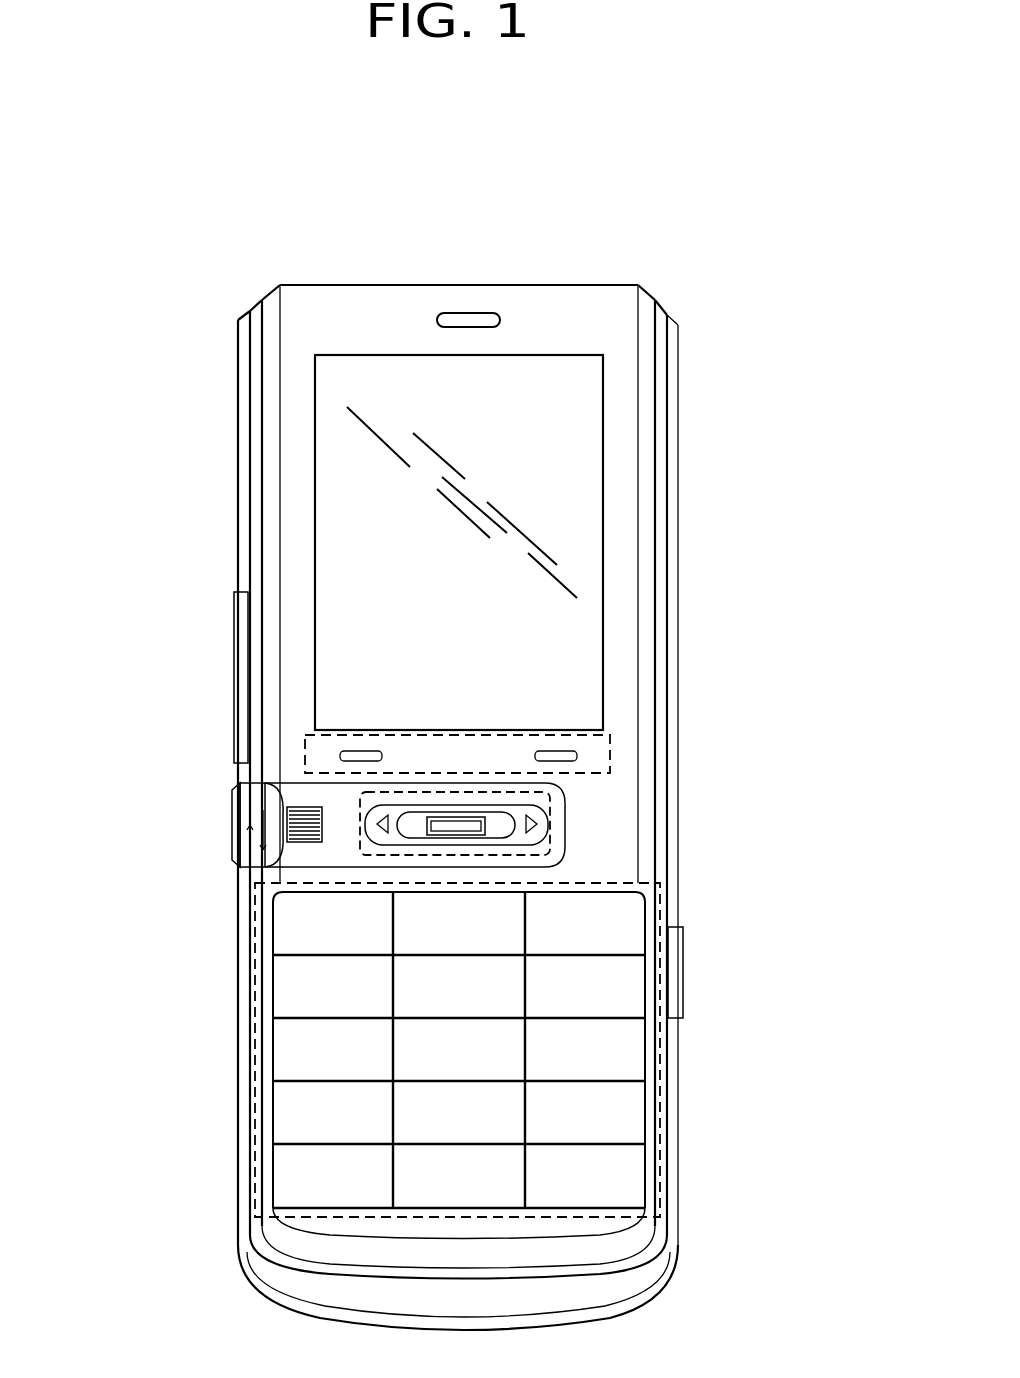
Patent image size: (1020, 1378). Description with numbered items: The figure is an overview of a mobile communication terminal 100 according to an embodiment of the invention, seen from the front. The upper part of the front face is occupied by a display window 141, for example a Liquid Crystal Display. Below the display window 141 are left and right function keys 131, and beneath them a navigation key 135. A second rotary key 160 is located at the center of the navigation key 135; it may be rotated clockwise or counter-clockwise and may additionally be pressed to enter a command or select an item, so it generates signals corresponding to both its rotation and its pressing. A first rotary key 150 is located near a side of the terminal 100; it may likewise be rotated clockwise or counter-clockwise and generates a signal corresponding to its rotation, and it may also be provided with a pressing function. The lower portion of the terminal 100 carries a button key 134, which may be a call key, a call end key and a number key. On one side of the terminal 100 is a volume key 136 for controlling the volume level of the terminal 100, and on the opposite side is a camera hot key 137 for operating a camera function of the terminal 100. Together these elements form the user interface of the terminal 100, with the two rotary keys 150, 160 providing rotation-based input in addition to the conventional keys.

The mobile communication terminal 100 is at (566, 284).
The display window 141 is at (603, 537).
The left and right function keys 131 is at (608, 748).
The navigation key 135 is at (560, 808).
The second rotary key 160 is at (460, 828).
The first rotary key 150 is at (232, 827).
The volume key 136 is at (233, 673).
The camera hot key 137 is at (683, 975).
The button key 134 is at (255, 985).